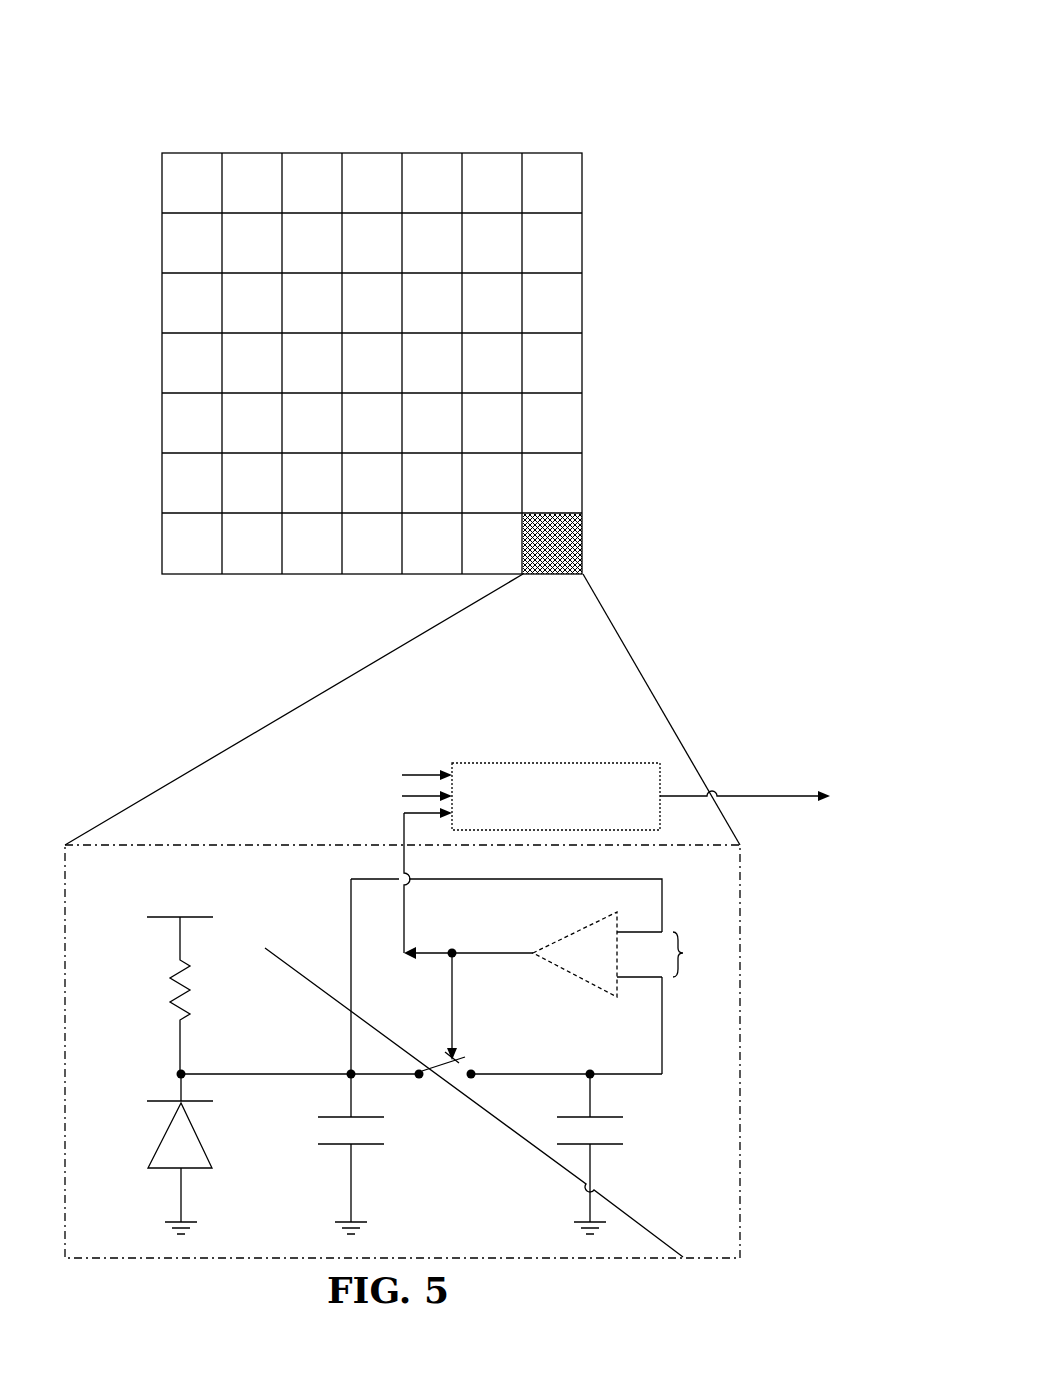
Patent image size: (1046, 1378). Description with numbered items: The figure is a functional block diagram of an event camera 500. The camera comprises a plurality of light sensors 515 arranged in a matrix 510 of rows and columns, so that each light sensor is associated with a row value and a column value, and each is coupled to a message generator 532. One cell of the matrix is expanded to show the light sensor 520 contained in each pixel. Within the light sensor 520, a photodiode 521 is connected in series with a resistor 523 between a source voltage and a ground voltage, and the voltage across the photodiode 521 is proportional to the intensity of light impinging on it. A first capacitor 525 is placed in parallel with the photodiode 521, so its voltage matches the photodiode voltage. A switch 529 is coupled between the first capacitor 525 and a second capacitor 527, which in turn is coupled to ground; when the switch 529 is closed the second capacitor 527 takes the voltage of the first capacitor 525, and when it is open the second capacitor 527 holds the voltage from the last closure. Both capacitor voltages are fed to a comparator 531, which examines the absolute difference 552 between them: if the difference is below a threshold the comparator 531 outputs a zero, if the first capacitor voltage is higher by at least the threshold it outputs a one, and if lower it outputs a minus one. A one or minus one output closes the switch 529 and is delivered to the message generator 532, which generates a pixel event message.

The event camera 500 is at (343, 37).
The matrix 510 is at (343, 154).
The light sensors 515 is at (568, 193).
The light sensor 520 is at (272, 845).
The photodiode 521 is at (96, 1169).
The resistor 523 is at (124, 1001).
The first capacitor 525 is at (276, 1141).
The second capacitor 527 is at (518, 1146).
The switch 529 is at (431, 1076).
The comparator 531 is at (573, 969).
The message generator 532 is at (543, 818).
The absolute difference 552 is at (699, 954).